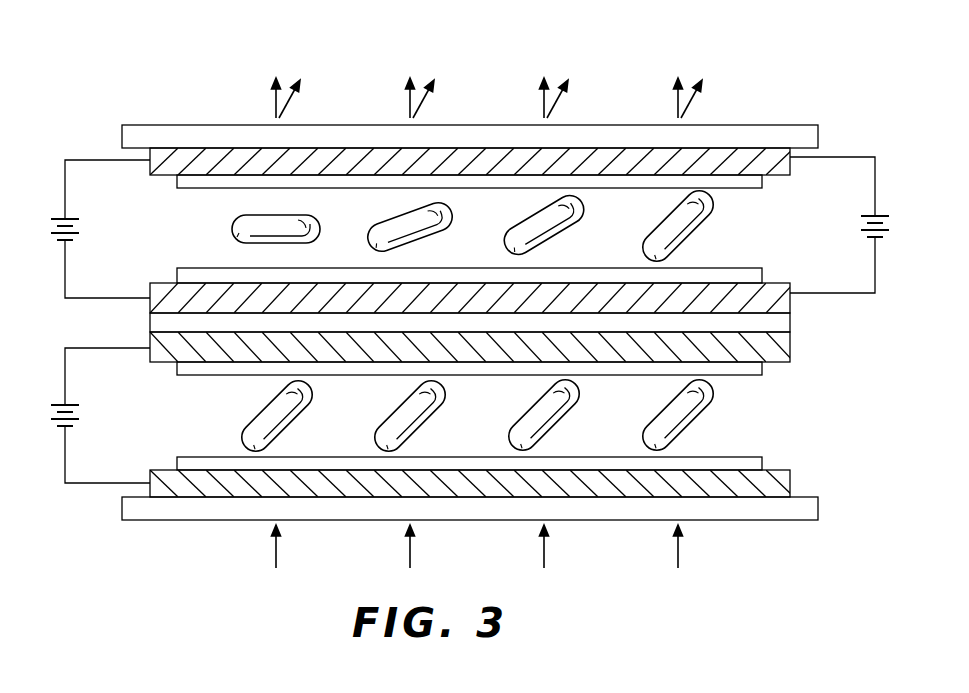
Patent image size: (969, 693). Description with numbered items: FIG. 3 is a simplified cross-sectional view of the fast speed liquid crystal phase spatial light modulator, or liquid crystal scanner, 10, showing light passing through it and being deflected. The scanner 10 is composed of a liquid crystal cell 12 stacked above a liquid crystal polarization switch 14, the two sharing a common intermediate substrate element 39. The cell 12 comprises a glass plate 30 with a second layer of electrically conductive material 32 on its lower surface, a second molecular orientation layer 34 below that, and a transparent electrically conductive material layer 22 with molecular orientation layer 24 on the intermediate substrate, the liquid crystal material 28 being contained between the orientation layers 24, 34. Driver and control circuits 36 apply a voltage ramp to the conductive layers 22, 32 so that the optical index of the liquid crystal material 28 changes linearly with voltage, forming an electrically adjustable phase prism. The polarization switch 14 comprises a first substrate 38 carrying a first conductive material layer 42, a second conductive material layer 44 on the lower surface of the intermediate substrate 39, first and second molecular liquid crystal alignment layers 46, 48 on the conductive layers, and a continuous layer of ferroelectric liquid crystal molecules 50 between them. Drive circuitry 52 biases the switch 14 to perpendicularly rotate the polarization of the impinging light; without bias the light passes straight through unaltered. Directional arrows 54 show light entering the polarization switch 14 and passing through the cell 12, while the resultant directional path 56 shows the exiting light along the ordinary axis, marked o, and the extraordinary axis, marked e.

The liquid crystal phase spatial light modulator 10 is at (311, 624).
The liquid crystal cell 12 is at (138, 212).
The liquid crystal polarization switch 14 is at (138, 400).
The transparent electrically conductive material layer 22 is at (778, 282).
The molecular orientation layer 24 is at (180, 268).
The liquid crystal material 28 is at (449, 208).
The glass plate 30 is at (819, 134).
The second layer of electrically conductive material 32 is at (779, 178).
The second molecular orientation layer 34 is at (221, 190).
The driver and control circuits 36 is at (80, 159).
The first substrate 38 is at (819, 506).
The common intermediate substrate element 39 is at (791, 322).
The first conductive material layer 42 is at (778, 468).
The second conductive material layer 44 is at (779, 363).
The first molecular liquid crystal alignment layer 46 is at (180, 457).
The second molecular liquid crystal alignment layer 48 is at (221, 378).
The liquid crystal molecules 50 is at (424, 425).
The drive circuitry 52 is at (72, 485).
The directional arrows 54 is at (280, 556).
The resultant directional path 56 is at (252, 79).